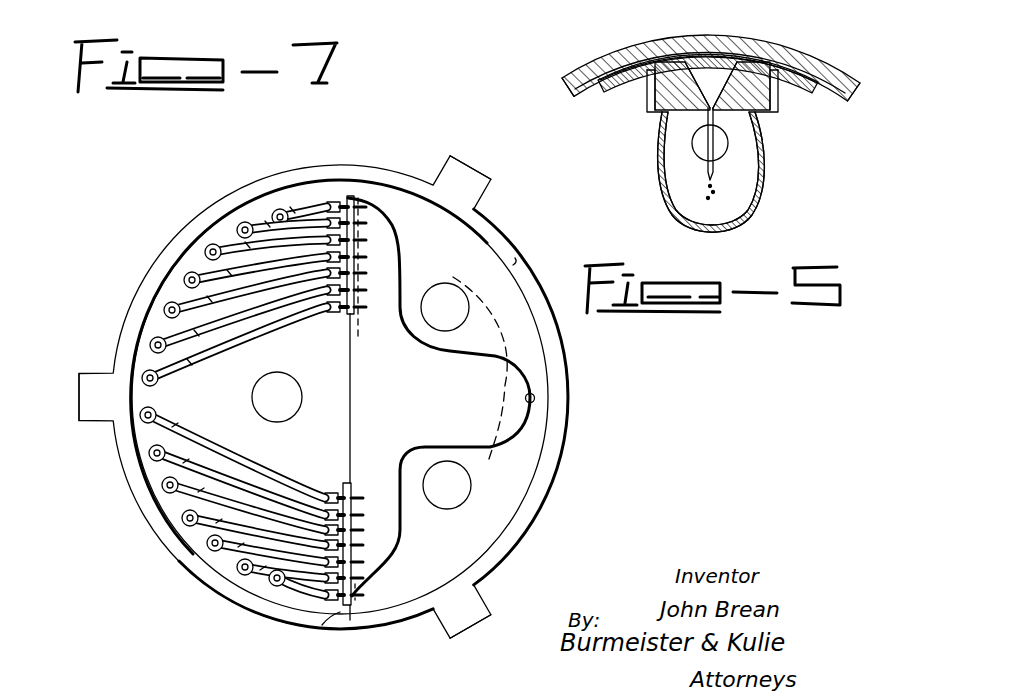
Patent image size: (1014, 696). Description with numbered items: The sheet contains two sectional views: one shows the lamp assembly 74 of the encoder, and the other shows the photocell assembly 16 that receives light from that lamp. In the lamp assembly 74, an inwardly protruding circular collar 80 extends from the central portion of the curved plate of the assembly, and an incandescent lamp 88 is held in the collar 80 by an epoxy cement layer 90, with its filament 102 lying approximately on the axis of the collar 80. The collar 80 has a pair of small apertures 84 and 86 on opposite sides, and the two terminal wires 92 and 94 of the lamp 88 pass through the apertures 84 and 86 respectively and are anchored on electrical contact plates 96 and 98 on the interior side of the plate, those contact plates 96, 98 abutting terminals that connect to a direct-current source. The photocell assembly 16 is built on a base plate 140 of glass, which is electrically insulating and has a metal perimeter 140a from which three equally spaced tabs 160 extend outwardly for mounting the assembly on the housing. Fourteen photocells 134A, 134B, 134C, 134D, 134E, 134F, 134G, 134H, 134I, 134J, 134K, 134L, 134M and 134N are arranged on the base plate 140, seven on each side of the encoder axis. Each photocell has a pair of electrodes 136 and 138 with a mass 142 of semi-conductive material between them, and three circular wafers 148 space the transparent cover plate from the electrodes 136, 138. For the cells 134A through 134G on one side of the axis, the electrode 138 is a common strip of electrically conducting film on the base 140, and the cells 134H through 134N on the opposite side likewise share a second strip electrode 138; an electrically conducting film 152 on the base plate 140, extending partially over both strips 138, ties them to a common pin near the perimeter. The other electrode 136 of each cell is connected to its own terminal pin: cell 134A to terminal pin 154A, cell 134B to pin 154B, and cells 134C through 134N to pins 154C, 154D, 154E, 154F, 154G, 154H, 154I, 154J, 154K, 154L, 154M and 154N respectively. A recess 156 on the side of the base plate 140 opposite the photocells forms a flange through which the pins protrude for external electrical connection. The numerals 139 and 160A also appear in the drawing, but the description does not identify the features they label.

In FIG. 5, the photocell assembly 16 is at (673, 50).
In FIG. 5, the lamp assembly 74 is at (805, 47).
In FIG. 5, the circular collar 80 is at (655, 118).
In FIG. 5, the small aperture 84 is at (652, 93).
In FIG. 5, the small aperture 86 is at (778, 100).
In FIG. 5, the lamp 88 is at (762, 168).
In FIG. 5, the epoxy cement layer 90 is at (660, 107).
In FIG. 5, the terminal wire 92 is at (684, 62).
In FIG. 5, the terminal wire 94 is at (742, 52).
In FIG. 5, the electrical contact plate 96 is at (590, 100).
In FIG. 5, the electrical contact plate 98 is at (846, 106).
In FIG. 5, the filament 102 is at (706, 188).
In FIG. 7, the photocell 134A is at (352, 195).
In FIG. 7, the photocell 134B is at (364, 222).
In FIG. 7, the photocell 134C is at (364, 240).
In FIG. 7, the photocell 134D is at (364, 257).
In FIG. 7, the photocell 134E is at (364, 273).
In FIG. 7, the photocell 134F is at (356, 294).
In FIG. 7, the photocell 134G is at (346, 312).
In FIG. 7, the photocell 134H is at (357, 497).
In FIG. 7, the photocell 134I is at (358, 512).
In FIG. 7, the photocell 134J is at (363, 530).
In FIG. 7, the photocell 134K is at (363, 545).
In FIG. 7, the photocell 134L is at (363, 562).
In FIG. 7, the photocell 134M is at (363, 578).
In FIG. 7, the photocell 134N is at (345, 607).
In FIG. 7, the electrode 136 is at (341, 485).
In FIG. 7, the electrode 138 is at (333, 356).
In FIG. 7, the strip end 139 is at (357, 592).
In FIG. 7, the base plate 140 is at (523, 348).
In FIG. 7, the metal perimeter 140a is at (513, 265).
In FIG. 7, the mass of semi-conductive material 142 is at (322, 625).
In FIG. 7, the circular wafers 148 is at (462, 325).
In FIG. 7, the electrically conducting film 152 is at (466, 408).
In FIG. 7, the terminal pin 154A is at (280, 208).
In FIG. 7, the terminal pin 154B is at (245, 222).
In FIG. 7, the terminal pin 154C is at (213, 244).
In FIG. 7, the terminal pin 154D is at (192, 272).
In FIG. 7, the terminal pin 154E is at (165, 306).
In FIG. 7, the terminal pin 154F is at (151, 341).
In FIG. 7, the terminal pin 154G is at (143, 374).
In FIG. 7, the terminal pin 154H is at (156, 410).
In FIG. 7, the terminal pin 154I is at (150, 454).
In FIG. 7, the terminal pin 154J is at (163, 485).
In FIG. 7, the terminal pin 154K is at (182, 519).
In FIG. 7, the terminal pin 154L is at (208, 547).
In FIG. 7, the terminal pin 154M is at (240, 572).
In FIG. 7, the terminal pin 154N is at (272, 585).
In FIG. 7, the recess 156 is at (497, 453).
In FIG. 7, the tabs 160 is at (456, 163).
In FIG. 7, the pivot 160A is at (525, 396).